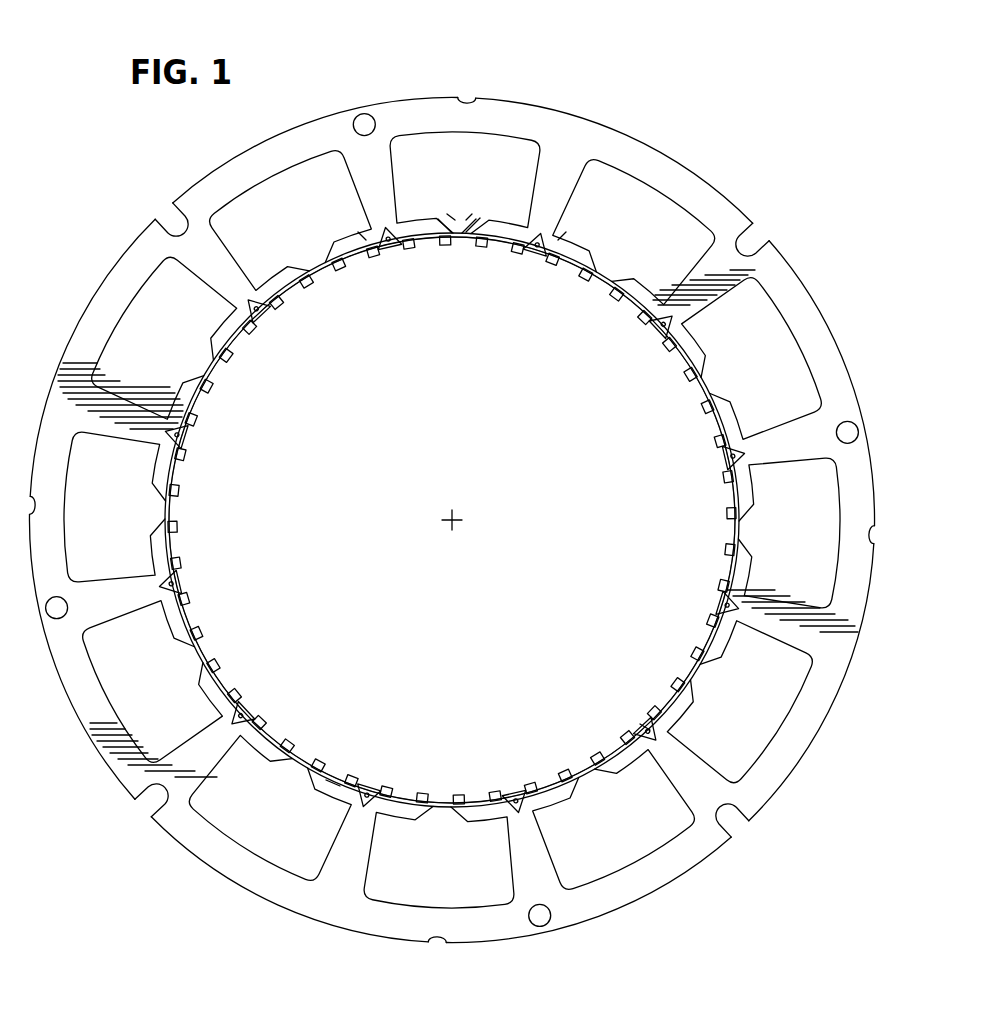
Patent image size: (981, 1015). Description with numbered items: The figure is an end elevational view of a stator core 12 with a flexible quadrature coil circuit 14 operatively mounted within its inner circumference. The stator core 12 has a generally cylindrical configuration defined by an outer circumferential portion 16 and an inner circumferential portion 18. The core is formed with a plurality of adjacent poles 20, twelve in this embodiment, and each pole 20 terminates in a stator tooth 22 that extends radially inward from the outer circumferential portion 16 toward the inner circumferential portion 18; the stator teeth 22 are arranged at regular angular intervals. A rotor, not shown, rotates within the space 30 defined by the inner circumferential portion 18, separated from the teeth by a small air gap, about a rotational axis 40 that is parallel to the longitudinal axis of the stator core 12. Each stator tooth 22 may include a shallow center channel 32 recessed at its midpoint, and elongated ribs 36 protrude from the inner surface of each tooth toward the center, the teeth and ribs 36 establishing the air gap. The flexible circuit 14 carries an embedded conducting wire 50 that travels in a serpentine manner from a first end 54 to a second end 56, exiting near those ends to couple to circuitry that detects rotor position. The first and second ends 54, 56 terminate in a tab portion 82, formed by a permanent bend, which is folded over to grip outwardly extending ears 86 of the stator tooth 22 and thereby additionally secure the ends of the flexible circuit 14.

The stator core 12 is at (451, 493).
The flexible quadrature coil circuit 14 is at (668, 340).
The outer circumferential portion 16 is at (722, 193).
The inner circumferential portion 18 is at (208, 401).
The poles 20 is at (389, 250).
The stator tooth 22 is at (763, 432).
The space 30 is at (440, 580).
The center channel 32 is at (256, 299).
The elongated ribs 36 is at (332, 778).
The rotational axis 40 is at (456, 516).
The conducting wire 50 is at (363, 238).
The first end 54 is at (443, 250).
The second end 56 is at (469, 249).
The tab portion 82 is at (453, 218).
The outwardly extending ears 86 is at (469, 255).